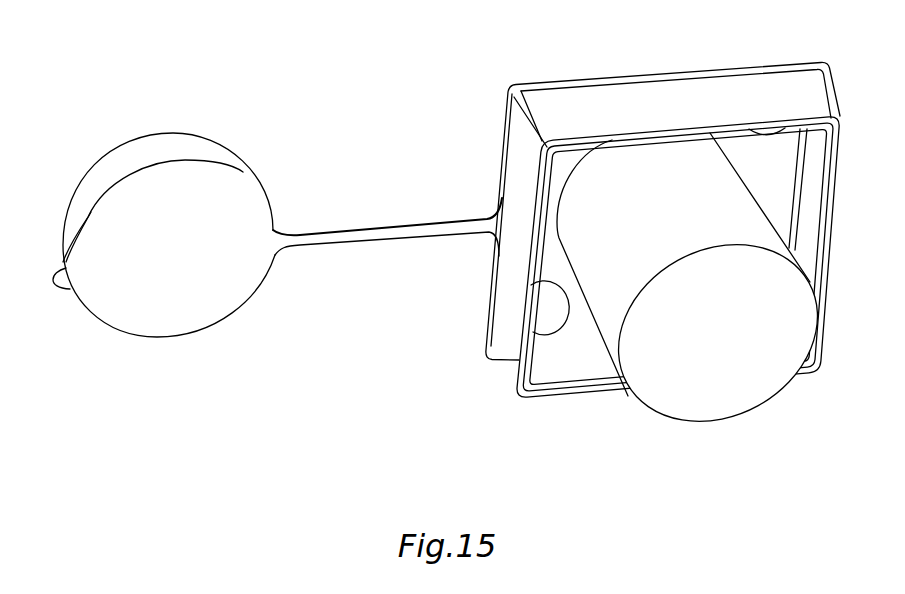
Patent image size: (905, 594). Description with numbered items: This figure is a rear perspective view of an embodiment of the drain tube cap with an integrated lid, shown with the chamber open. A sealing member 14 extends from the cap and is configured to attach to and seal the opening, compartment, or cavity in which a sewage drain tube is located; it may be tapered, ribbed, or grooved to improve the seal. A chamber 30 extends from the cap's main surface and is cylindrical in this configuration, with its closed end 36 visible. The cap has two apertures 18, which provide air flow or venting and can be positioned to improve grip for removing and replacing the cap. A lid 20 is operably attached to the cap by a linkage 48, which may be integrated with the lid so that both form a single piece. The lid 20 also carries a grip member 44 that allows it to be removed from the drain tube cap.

The sealing member 14 is at (570, 102).
The aperture 18 is at (768, 129).
The lid 20 is at (207, 116).
The chamber 30 is at (622, 207).
The closed end 36 is at (738, 400).
The grip member 44 is at (66, 285).
The linkage 48 is at (398, 227).